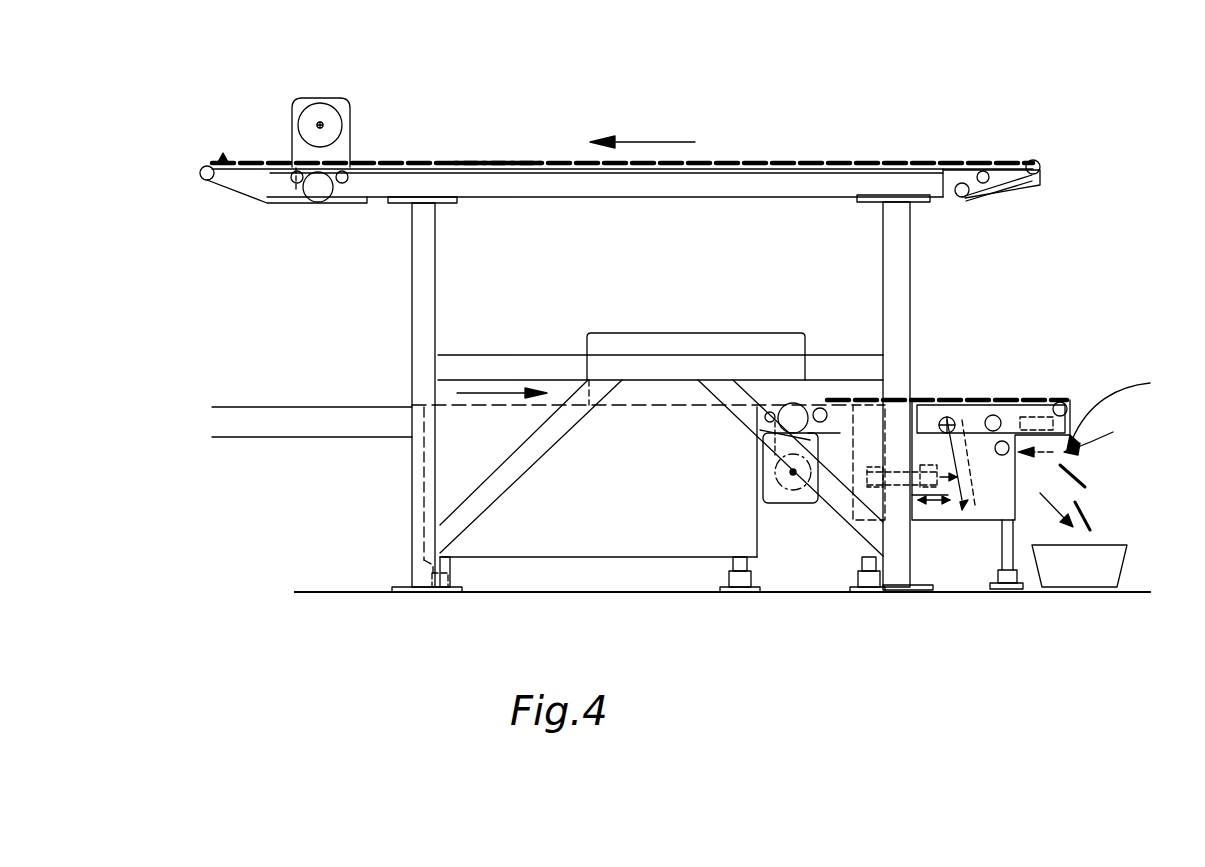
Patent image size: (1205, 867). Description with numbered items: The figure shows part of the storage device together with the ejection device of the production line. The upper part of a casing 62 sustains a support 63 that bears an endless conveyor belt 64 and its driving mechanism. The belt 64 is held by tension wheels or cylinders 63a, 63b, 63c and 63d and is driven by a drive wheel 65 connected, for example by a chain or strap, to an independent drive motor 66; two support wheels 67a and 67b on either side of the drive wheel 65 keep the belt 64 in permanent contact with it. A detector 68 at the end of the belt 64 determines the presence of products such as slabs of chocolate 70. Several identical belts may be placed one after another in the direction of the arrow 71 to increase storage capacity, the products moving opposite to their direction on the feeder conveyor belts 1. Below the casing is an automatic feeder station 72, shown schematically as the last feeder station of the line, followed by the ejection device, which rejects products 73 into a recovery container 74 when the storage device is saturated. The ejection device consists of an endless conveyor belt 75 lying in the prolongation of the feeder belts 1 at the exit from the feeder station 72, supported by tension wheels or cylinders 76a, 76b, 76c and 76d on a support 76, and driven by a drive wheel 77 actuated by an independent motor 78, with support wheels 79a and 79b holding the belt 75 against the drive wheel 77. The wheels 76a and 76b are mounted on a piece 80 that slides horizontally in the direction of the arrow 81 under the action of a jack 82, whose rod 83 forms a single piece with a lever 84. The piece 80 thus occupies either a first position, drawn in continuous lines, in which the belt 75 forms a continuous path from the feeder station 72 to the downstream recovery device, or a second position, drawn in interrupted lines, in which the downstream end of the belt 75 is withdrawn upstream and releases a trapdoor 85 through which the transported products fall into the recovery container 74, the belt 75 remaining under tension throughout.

The feeder conveyor belts 1 is at (262, 415).
The casing 62 is at (656, 262).
The support 63 is at (762, 180).
The tension wheel or cylinder 63a is at (1040, 166).
The tension wheel or cylinder 63b is at (1004, 184).
The tension wheel or cylinder 63c is at (962, 197).
The tension wheel or cylinder 63d is at (201, 170).
The endless conveyor belt 64 is at (812, 160).
The drive wheel 65 is at (318, 192).
The independent drive motor 66 is at (347, 108).
The support wheel 67a is at (292, 180).
The support wheel 67b is at (343, 184).
The detector 68 is at (223, 158).
The slabs of chocolate 70 is at (536, 160).
The arrow 71 is at (700, 142).
The automatic feeder station 72 is at (600, 530).
The products 73 is at (1092, 528).
The recovery container 74 is at (1092, 560).
The endless conveyor belt 75 is at (996, 396).
The support 76 is at (961, 494).
The tension wheel or cylinder 76a is at (1072, 406).
The tension wheel or cylinder 76b is at (1017, 405).
The tension wheel or cylinder 76c is at (1000, 456).
The tension wheel or cylinder 76d is at (753, 410).
The drive wheel 77 is at (793, 402).
The independent motor 78 is at (790, 484).
The support wheel 79a is at (768, 412).
The support wheel 79b is at (822, 407).
The piece 80 is at (927, 408).
The arrow 81 is at (1099, 432).
The jack 82 is at (934, 496).
The rod 83 is at (950, 416).
The lever 84 is at (955, 420).
The trapdoor 85 is at (1121, 412).